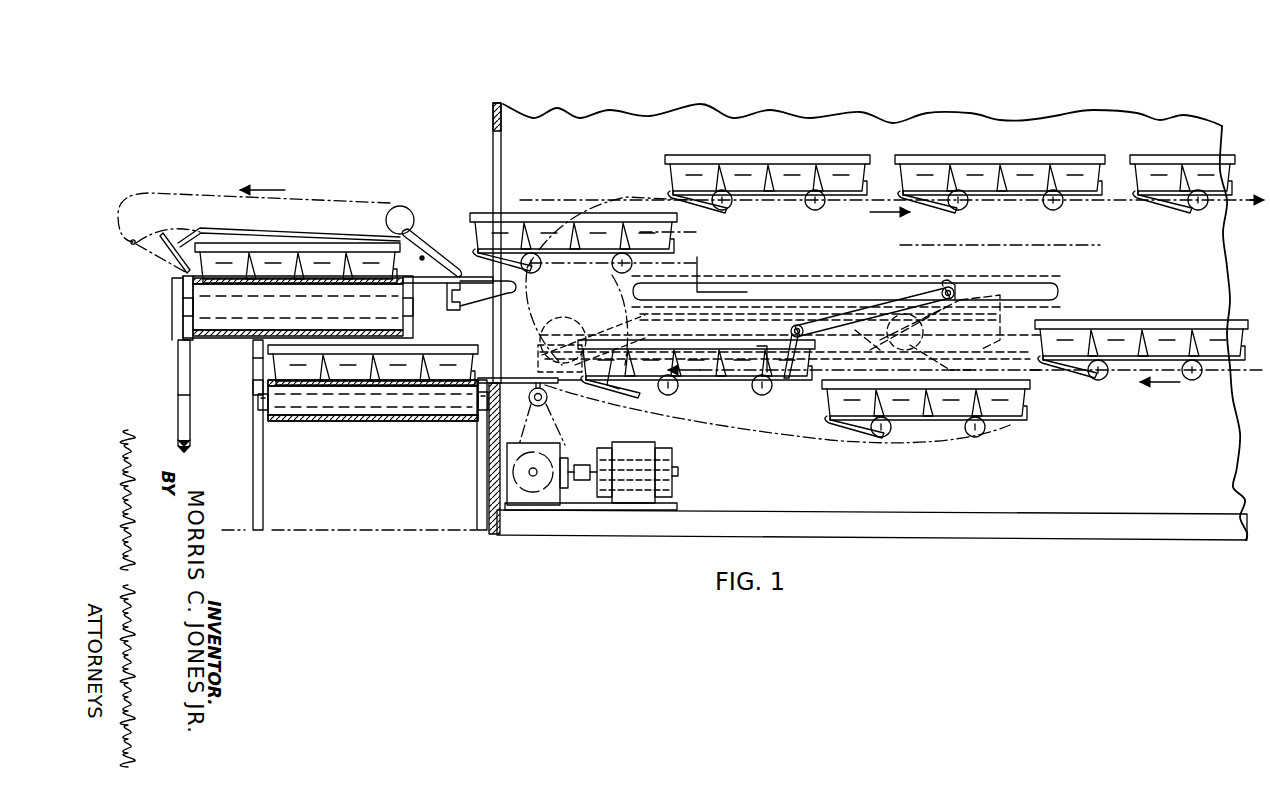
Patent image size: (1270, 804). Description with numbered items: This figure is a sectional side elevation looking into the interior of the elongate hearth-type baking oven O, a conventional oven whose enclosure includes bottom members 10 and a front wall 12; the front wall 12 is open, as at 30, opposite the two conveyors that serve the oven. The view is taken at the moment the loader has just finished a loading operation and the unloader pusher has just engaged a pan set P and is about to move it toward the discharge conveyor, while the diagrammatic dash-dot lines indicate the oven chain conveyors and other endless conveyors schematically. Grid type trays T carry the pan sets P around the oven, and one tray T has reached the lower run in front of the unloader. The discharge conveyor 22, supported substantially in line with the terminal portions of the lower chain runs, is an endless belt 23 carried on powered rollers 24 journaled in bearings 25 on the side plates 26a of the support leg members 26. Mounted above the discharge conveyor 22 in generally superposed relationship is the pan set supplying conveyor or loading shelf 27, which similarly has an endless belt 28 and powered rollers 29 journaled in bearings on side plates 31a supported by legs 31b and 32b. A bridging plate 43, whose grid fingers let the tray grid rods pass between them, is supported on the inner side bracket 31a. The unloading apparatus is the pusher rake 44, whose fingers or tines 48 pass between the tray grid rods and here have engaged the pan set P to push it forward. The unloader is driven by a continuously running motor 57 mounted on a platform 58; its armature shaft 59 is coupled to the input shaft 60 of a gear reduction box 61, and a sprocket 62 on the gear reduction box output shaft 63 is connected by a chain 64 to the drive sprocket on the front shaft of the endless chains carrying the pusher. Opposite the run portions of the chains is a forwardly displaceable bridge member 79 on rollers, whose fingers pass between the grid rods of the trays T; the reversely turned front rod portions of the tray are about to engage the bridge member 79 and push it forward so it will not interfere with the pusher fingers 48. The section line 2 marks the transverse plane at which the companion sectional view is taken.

The bottom members 10 is at (630, 525).
The front wall 12 is at (492, 532).
The discharge conveyor 22 is at (333, 424).
The endless belt 23 is at (428, 422).
The powered rollers 24 is at (384, 402).
The bearings 25 is at (262, 408).
The support leg members 26 is at (263, 512).
The side plates 26a is at (256, 445).
The pan set supplying conveyor 27 is at (232, 342).
The endless belt 28 is at (236, 330).
The powered rollers 29 is at (298, 307).
The opening 30 is at (492, 122).
The side plates 31a is at (180, 340).
The legs 31b is at (190, 440).
The legs 32b is at (256, 363).
The bridging plate 43 is at (448, 302).
The pusher rake 44 is at (900, 293).
The fingers or tines 48 is at (792, 320).
The motor 57 is at (665, 480).
The platform 58 is at (676, 505).
The armature shaft 59 is at (590, 462).
The input shaft 60 is at (566, 445).
The gear reduction box 61 is at (553, 500).
The sprocket 62 is at (546, 398).
The output shaft 63 is at (533, 478).
The chain 64 is at (572, 385).
The bridge member 79 is at (622, 392).
The pan set P is at (186, 284).
The tray T is at (775, 382).
The baking oven O is at (537, 106).
The section line 2 is at (520, 207).